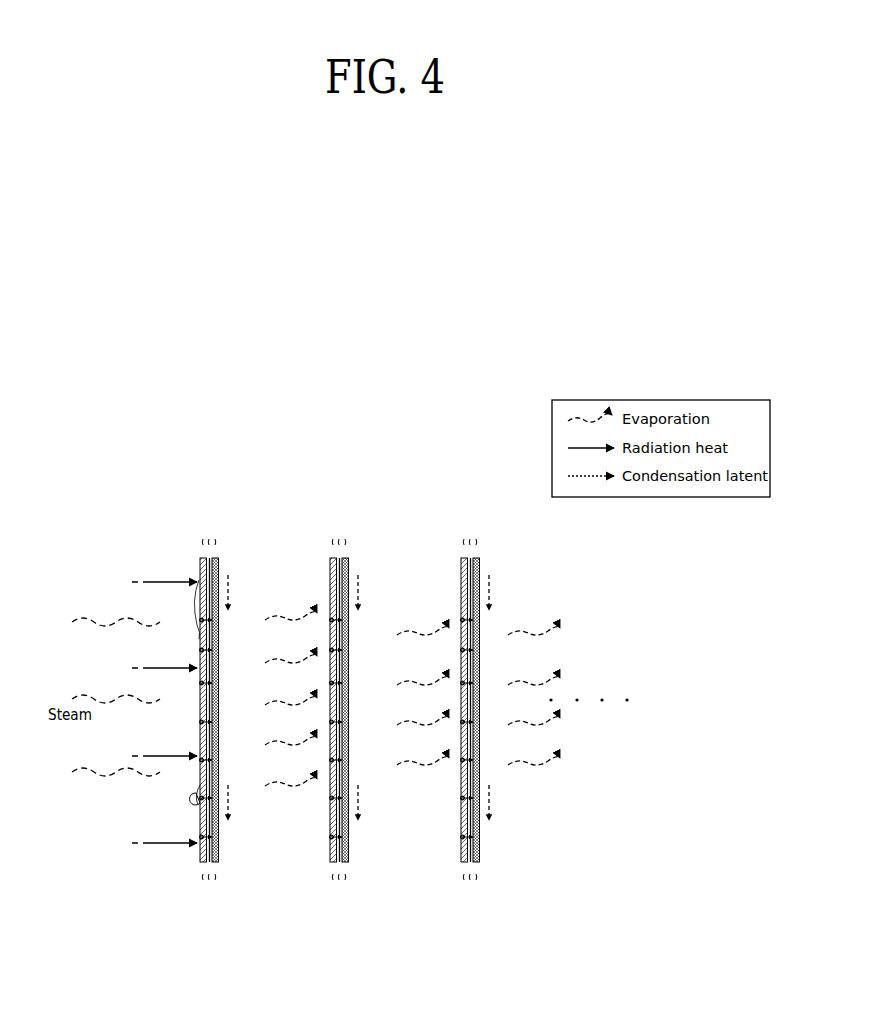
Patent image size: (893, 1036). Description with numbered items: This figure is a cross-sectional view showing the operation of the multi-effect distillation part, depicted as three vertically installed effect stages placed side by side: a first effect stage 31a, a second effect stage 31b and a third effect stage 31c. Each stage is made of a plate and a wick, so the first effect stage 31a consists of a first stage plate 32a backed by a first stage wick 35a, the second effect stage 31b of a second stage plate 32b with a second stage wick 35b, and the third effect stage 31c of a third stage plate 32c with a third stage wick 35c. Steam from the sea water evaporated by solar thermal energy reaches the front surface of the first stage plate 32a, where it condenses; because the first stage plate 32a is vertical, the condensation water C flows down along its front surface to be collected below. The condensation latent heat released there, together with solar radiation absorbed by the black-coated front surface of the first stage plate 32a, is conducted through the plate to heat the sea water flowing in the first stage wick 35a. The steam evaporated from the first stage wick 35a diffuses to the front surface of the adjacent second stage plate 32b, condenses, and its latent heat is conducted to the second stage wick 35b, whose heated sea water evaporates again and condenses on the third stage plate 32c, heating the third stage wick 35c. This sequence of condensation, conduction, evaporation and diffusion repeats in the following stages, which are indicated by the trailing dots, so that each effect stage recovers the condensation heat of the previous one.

The first effect stage 31a is at (203, 755).
The second effect stage 31b is at (334, 755).
The third effect stage 31c is at (467, 755).
The first stage plate 32a is at (201, 559).
The second stage plate 32b is at (331, 559).
The third stage plate 32c is at (462, 559).
The first stage wick 35a is at (218, 560).
The second stage wick 35b is at (349, 560).
The third stage wick 35c is at (480, 560).
The condensation water C is at (193, 798).